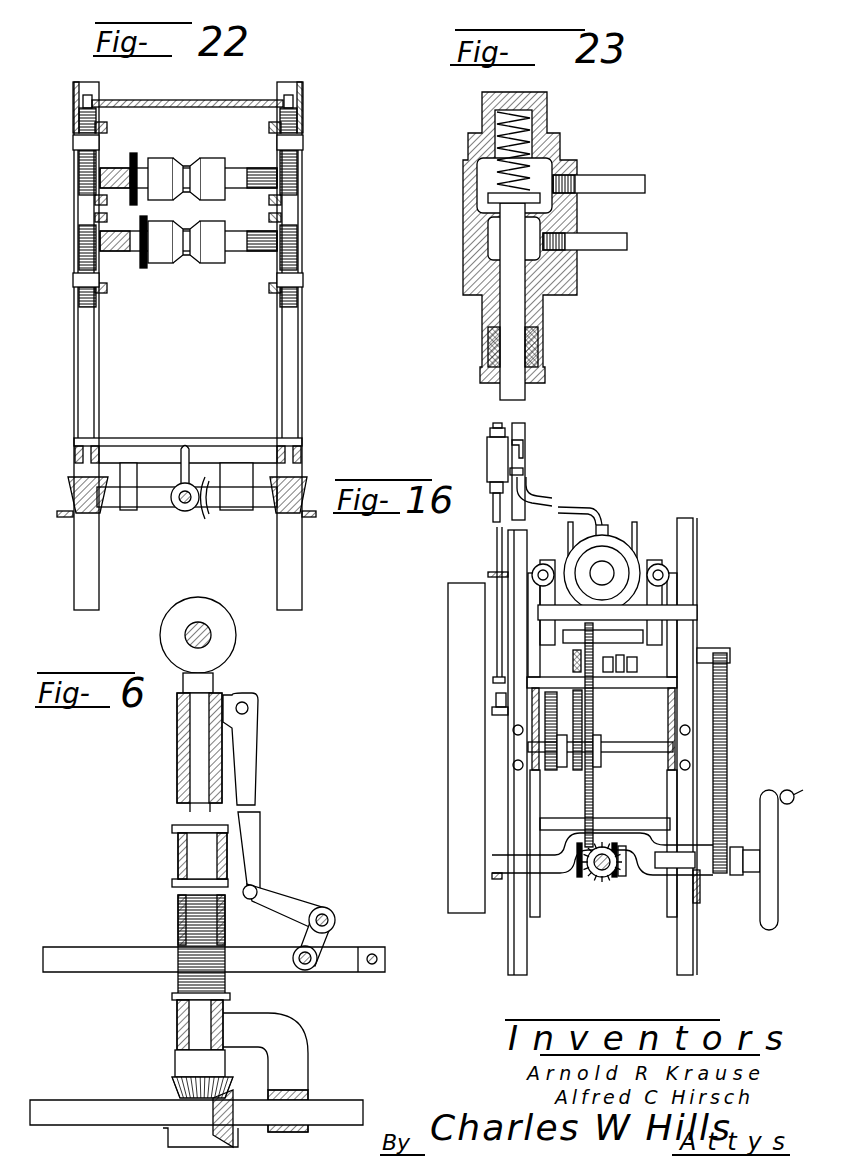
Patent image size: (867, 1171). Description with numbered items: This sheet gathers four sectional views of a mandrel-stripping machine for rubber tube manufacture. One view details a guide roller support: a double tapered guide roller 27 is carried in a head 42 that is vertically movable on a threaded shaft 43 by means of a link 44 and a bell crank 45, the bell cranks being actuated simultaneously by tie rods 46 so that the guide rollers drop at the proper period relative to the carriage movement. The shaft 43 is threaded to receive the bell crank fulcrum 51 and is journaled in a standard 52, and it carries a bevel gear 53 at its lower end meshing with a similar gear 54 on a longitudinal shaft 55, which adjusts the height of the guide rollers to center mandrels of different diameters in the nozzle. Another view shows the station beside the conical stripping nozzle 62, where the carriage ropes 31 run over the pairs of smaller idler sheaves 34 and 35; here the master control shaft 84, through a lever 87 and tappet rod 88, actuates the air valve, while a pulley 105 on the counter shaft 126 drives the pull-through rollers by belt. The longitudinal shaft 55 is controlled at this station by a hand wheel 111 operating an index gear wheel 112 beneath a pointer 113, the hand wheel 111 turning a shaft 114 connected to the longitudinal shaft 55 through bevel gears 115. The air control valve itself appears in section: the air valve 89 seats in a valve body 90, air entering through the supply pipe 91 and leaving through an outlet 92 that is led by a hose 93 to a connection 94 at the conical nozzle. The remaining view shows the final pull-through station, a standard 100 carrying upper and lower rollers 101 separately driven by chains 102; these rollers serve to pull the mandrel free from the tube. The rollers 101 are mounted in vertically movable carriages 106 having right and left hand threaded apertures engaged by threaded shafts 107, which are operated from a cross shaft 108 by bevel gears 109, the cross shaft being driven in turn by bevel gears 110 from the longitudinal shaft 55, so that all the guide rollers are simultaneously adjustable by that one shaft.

In FIG. 6, the double tapered guide rollers 27 is at (232, 645).
In FIG. 16, the ropes 31 is at (672, 703).
In FIG. 16, the idler sheaves 34 is at (675, 612).
In FIG. 16, the idler sheaves 35 is at (670, 790).
In FIG. 6, the heads 42 is at (180, 745).
In FIG. 6, the shafts 43 is at (185, 850).
In FIG. 6, the links 44 is at (248, 782).
In FIG. 6, the bell cranks 45 is at (283, 892).
In FIG. 6, the tie rods 46 is at (333, 965).
In FIG. 6, the bell crank fulcrums 51 is at (218, 947).
In FIG. 6, the standards 52 is at (178, 1020).
In FIG. 6, the bevel gears 53 is at (175, 1082).
In FIG. 6, the bevel gears 54 is at (200, 1130).
In FIG. 22, the longitudinal shaft 55 is at (185, 504).
In FIG. 16, the longitudinal shaft 55 is at (595, 877).
In FIG. 6, the longitudinal shaft 55 is at (196, 1118).
In FIG. 16, the conical stripping nozzle 62 is at (600, 573).
In FIG. 16, the master control shaft 84 is at (548, 818).
In FIG. 16, the lever 87 is at (498, 712).
In FIG. 16, the tappet rod 88 is at (497, 543).
In FIG. 23, the air valve 89 is at (490, 237).
In FIG. 23, the valve body 90 is at (517, 203).
In FIG. 16, the valve body 90 is at (490, 455).
In FIG. 23, the supply pipe 91 is at (603, 183).
In FIG. 16, the supply pipe 91 is at (523, 447).
In FIG. 23, the outlet 92 is at (600, 241).
In FIG. 16, the outlet 92 is at (523, 471).
In FIG. 16, the hose 93 is at (540, 500).
In FIG. 16, the connection 94 is at (610, 528).
In FIG. 22, the standard 100 is at (302, 243).
In FIG. 22, the rollers 101 is at (214, 190).
In FIG. 22, the chains 102 is at (132, 208).
In FIG. 16, the pulley 105 is at (479, 709).
In FIG. 22, the carriages 106 is at (77, 143).
In FIG. 22, the threaded shafts 107 is at (87, 355).
In FIG. 22, the cross shaft 108 is at (155, 505).
In FIG. 22, the bevel gears 109 is at (93, 504).
In FIG. 22, the bevel gears 110 is at (203, 516).
In FIG. 16, the hand wheel 111 is at (768, 882).
In FIG. 16, the index gear wheel 112 is at (728, 785).
In FIG. 16, the pointer 113 is at (730, 660).
In FIG. 16, the shaft 114 is at (670, 862).
In FIG. 16, the bevel gears 115 is at (612, 878).
In FIG. 16, the counter shaft 126 is at (610, 752).